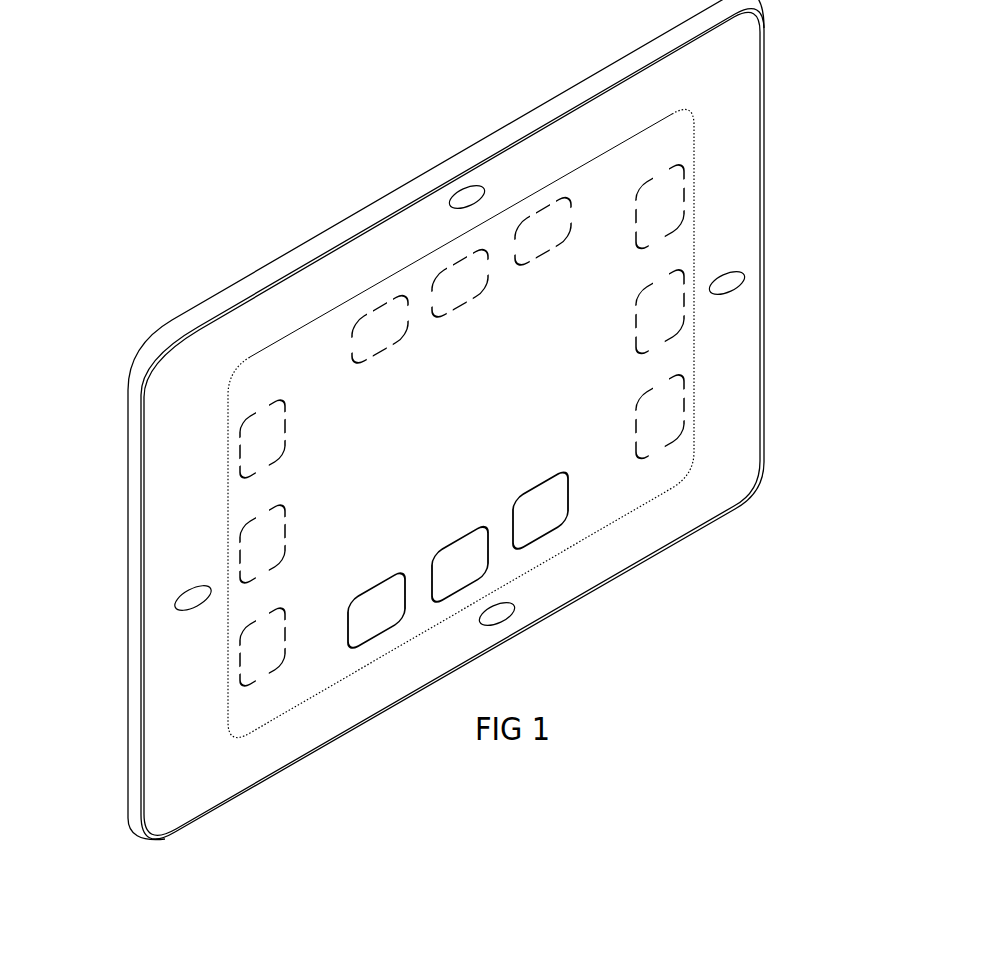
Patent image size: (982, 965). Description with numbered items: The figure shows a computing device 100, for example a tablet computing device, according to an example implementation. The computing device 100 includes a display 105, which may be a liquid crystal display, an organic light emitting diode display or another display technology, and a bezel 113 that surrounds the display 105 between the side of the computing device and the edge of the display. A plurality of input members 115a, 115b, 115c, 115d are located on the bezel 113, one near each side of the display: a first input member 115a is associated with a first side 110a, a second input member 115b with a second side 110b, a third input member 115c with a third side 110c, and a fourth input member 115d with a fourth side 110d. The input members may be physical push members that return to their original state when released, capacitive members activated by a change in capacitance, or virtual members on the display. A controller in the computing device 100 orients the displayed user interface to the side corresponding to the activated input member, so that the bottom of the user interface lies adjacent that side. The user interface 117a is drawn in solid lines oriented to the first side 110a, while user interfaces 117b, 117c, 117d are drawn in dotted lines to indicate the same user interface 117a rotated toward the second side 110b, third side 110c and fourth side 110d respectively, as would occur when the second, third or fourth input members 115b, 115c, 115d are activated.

The computing device 100 is at (576, 45).
The display 105 is at (605, 178).
The first side 110a is at (590, 593).
The second side 110b is at (127, 713).
The third side 110c is at (642, 62).
The fourth side 110d is at (767, 157).
The bezel 113 is at (238, 338).
The first input member 115a is at (498, 616).
The second input member 115b is at (183, 594).
The third input member 115c is at (450, 197).
The fourth input member 115d is at (730, 290).
The user interface 117a is at (393, 572).
The user interface 117b is at (285, 426).
The user interface 117c is at (525, 277).
The user interface 117d is at (637, 417).